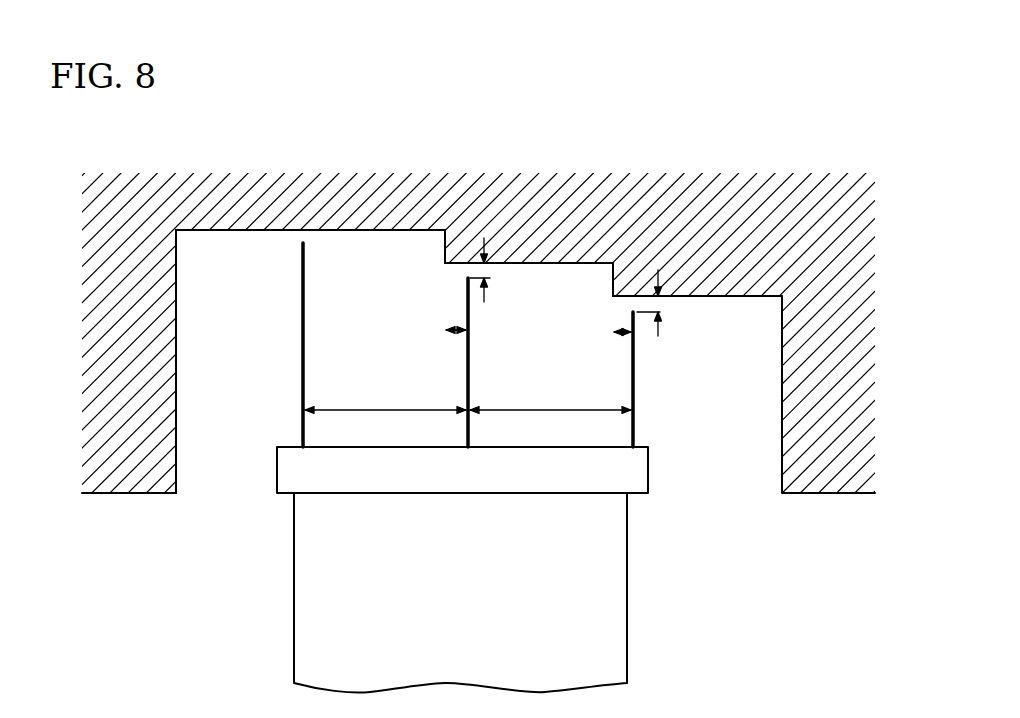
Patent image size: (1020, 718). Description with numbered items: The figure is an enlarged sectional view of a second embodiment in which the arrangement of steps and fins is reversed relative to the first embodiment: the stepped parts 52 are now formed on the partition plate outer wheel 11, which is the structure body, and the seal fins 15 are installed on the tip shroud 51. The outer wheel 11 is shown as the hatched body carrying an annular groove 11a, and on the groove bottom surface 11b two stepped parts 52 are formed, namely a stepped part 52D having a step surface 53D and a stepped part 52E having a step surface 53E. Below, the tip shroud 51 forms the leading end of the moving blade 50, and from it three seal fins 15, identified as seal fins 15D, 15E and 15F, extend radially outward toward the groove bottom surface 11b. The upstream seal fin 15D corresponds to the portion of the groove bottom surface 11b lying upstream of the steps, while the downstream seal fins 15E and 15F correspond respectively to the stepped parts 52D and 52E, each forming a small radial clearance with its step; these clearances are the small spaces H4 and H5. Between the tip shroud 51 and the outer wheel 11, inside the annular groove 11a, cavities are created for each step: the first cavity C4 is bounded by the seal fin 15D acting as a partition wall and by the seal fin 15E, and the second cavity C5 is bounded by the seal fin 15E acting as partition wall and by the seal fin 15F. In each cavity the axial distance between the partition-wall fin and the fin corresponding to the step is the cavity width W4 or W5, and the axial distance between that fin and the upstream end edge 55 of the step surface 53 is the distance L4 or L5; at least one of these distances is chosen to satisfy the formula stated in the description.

The partition plate outer wheel 11 is at (843, 481).
The annular groove 11a is at (178, 232).
The groove bottom surface 11b is at (232, 232).
The seal fins 15 is at (423, 416).
The seal fin 15D is at (300, 428).
The seal fin 15E is at (468, 432).
The seal fin 15F is at (633, 432).
The moving blade 50 is at (636, 647).
The tip shroud 51 is at (630, 470).
The stepped parts 52 is at (613, 205).
The stepped part 52D is at (546, 272).
The stepped part 52E is at (692, 305).
The step surface 53 is at (523, 192).
The step surface 53D is at (445, 250).
The step surface 53E is at (612, 282).
The end edge 55 is at (445, 263).
The first cavity C4 is at (343, 273).
The second cavity C5 is at (524, 284).
The small space H4 is at (490, 270).
The small space H5 is at (660, 308).
The distance L4 is at (462, 332).
The distance L5 is at (630, 340).
The cavity width W4 is at (385, 424).
The cavity width W5 is at (550, 424).